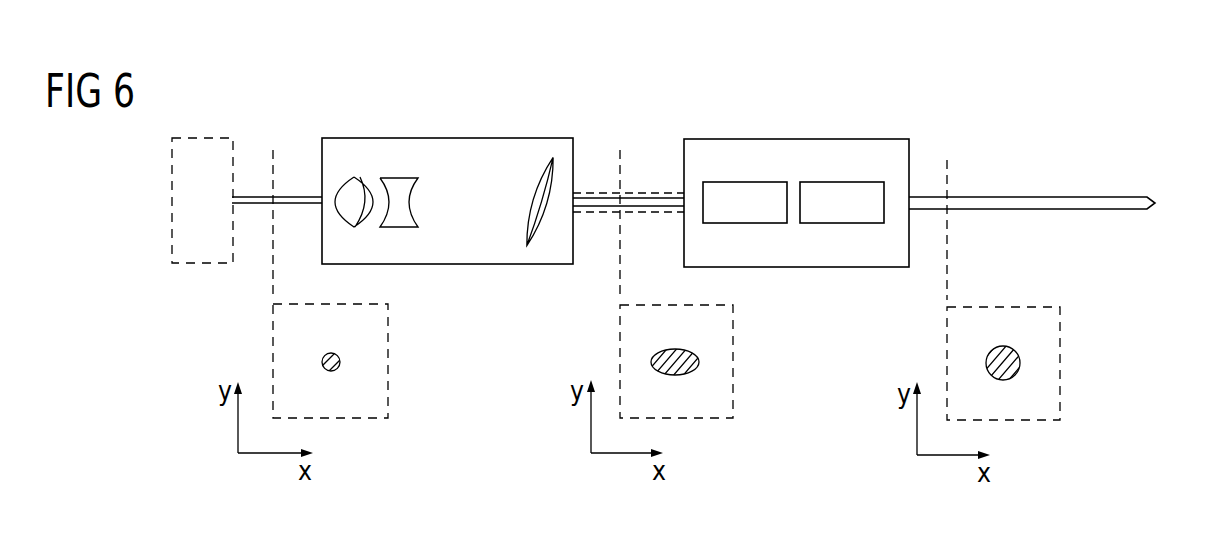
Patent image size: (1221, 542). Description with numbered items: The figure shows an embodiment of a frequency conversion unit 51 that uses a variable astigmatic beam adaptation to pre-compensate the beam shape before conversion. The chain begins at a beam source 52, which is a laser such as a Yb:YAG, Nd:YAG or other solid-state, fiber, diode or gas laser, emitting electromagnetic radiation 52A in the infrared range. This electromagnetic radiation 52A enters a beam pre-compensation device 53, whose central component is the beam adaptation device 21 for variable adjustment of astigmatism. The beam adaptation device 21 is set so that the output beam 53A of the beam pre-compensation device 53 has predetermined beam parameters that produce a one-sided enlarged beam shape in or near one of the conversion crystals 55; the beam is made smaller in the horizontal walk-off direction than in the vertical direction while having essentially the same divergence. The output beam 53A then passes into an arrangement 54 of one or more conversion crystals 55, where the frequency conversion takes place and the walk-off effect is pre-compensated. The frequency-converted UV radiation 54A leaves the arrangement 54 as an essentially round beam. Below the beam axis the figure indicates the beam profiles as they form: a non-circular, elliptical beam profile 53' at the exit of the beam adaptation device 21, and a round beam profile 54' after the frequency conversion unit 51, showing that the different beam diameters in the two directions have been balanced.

The beam adaptation device 21 is at (466, 138).
The frequency conversion unit 51 is at (1132, 281).
The beam source 52 is at (190, 264).
The electromagnetic radiation 52A is at (288, 181).
The beam pre-compensation device 53 is at (371, 361).
The output beam 53A is at (651, 181).
The beam profile 53' is at (715, 361).
The arrangement of conversion crystals 54 is at (796, 280).
The UV radiation 54A is at (1086, 184).
The beam profile 54' is at (1038, 363).
The conversion crystal 55 is at (740, 182).